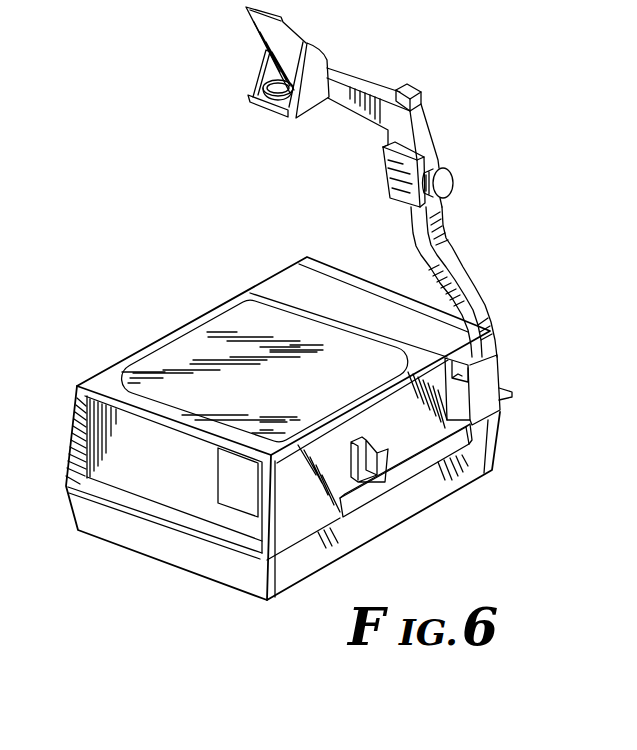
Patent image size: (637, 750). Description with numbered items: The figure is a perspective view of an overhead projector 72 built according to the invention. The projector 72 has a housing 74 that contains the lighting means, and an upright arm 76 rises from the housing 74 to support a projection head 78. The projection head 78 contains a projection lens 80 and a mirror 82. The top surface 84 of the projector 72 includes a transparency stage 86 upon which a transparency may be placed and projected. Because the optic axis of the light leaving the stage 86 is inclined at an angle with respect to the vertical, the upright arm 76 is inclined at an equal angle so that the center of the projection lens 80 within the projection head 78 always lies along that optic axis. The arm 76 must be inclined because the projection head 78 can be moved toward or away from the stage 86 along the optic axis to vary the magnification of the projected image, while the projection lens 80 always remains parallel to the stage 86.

The overhead projector 72 is at (441, 246).
The housing 74 is at (498, 438).
The upright arm 76 is at (485, 268).
The projection head 78 is at (323, 50).
The projection lens 80 is at (291, 100).
The mirror 82 is at (258, 27).
The top surface 84 is at (290, 277).
The transparency stage 86 is at (215, 342).